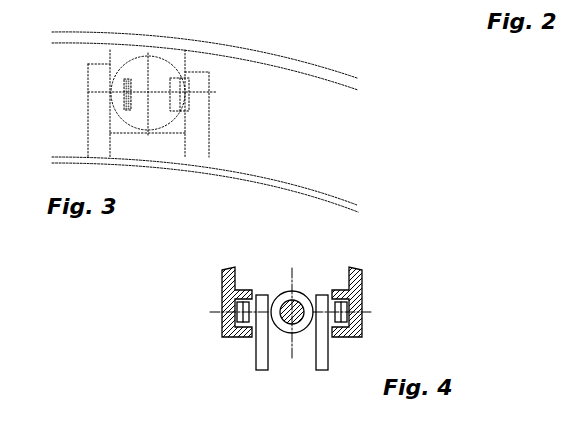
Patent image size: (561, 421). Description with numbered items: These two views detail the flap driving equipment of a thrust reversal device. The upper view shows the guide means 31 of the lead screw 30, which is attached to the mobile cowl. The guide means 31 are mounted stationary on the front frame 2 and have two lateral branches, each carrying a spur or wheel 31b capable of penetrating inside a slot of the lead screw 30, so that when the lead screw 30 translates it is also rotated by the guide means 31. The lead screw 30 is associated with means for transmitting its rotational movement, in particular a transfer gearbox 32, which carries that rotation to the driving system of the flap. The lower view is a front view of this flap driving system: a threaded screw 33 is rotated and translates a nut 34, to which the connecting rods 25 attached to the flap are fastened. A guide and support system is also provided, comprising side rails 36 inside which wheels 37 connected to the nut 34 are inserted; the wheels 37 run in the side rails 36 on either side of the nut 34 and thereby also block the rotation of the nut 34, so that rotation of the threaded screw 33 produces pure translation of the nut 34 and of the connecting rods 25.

In FIG. 3, the front frame 2 is at (250, 78).
In FIG. 3, the lead screw 30 is at (131, 115).
In FIG. 3, the guide means 31 is at (100, 80).
In FIG. 3, the spur 31b is at (118, 82).
In FIG. 3, the transfer gearbox 32 is at (125, 56).
In FIG. 4, the threaded screw 33 is at (299, 298).
In FIG. 4, the nut 34 is at (285, 292).
In FIG. 4, the side rails 36 is at (222, 283).
In FIG. 4, the wheels 37 is at (226, 320).
In FIG. 4, the connecting rods 25 is at (260, 360).